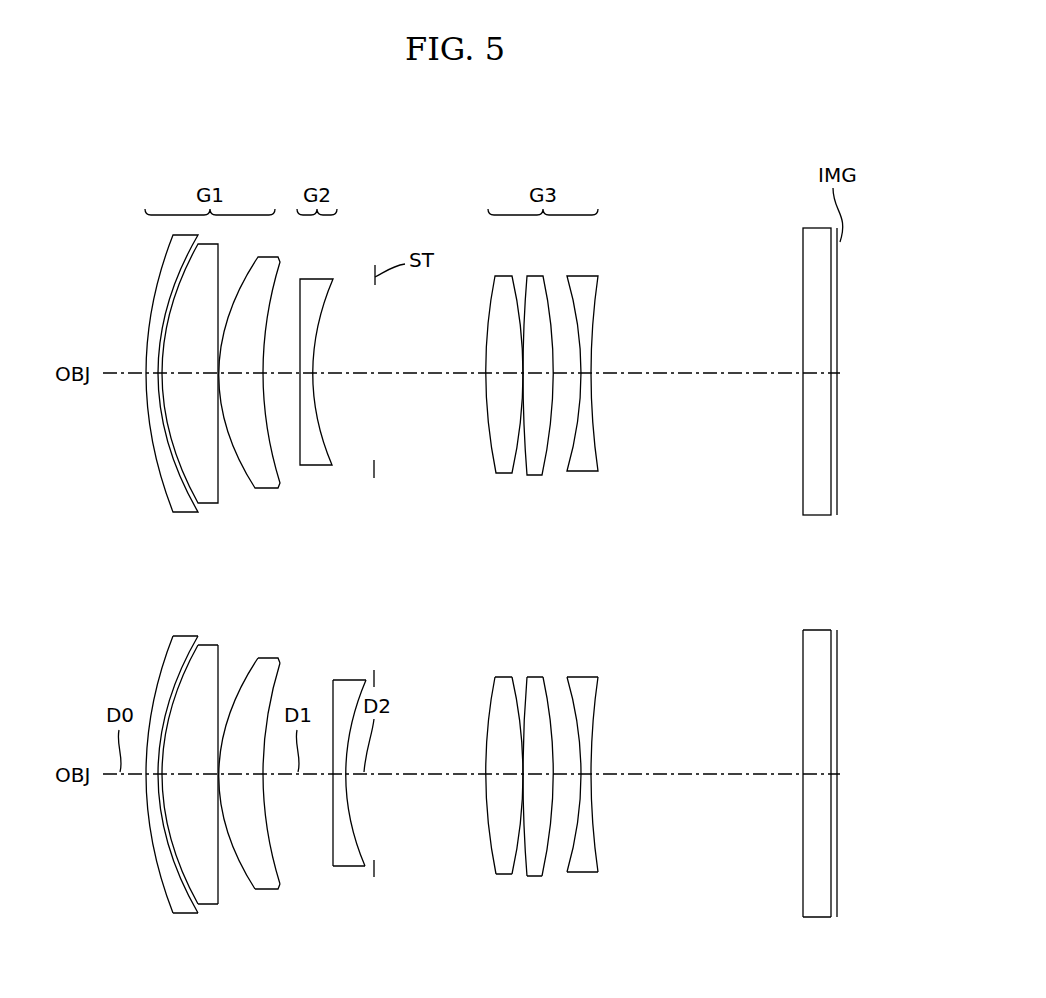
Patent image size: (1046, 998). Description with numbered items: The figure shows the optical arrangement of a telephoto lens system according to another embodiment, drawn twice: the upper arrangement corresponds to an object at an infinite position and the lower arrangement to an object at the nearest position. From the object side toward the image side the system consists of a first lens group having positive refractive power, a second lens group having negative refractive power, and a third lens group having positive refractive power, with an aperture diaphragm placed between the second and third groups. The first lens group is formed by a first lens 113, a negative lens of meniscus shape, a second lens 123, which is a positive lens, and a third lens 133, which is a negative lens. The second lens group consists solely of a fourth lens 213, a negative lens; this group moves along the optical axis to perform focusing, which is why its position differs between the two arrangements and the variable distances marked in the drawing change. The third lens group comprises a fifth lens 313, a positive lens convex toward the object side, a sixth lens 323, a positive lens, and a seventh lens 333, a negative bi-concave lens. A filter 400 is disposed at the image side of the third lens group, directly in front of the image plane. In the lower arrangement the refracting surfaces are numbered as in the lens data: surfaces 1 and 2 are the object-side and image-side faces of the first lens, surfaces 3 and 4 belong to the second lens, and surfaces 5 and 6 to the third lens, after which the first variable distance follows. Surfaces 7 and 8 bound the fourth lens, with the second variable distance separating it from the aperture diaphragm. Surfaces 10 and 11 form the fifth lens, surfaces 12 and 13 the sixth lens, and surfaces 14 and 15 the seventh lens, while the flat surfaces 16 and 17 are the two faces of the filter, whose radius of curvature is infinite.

The first lens 113 is at (184, 513).
The second lens 123 is at (212, 504).
The third lens 133 is at (267, 489).
The fourth lens 213 is at (316, 466).
The fifth lens 313 is at (503, 474).
The sixth lens 323 is at (535, 476).
The seventh lens 333 is at (583, 472).
The filter 400 is at (808, 250).
The surface 1 is at (148, 821).
The surface 2 is at (168, 848).
The surface 3 is at (182, 877).
The surface 4 is at (220, 871).
The surface 5 is at (230, 833).
The surface 6 is at (273, 857).
The surface 7 is at (335, 814).
The surface 8 is at (355, 841).
The surface 10 is at (487, 812).
The surface 11 is at (520, 843).
The surface 12 is at (526, 856).
The surface 13 is at (547, 858).
The surface 14 is at (580, 815).
The surface 15 is at (597, 848).
The surface 16 is at (803, 848).
The surface 17 is at (831, 882).